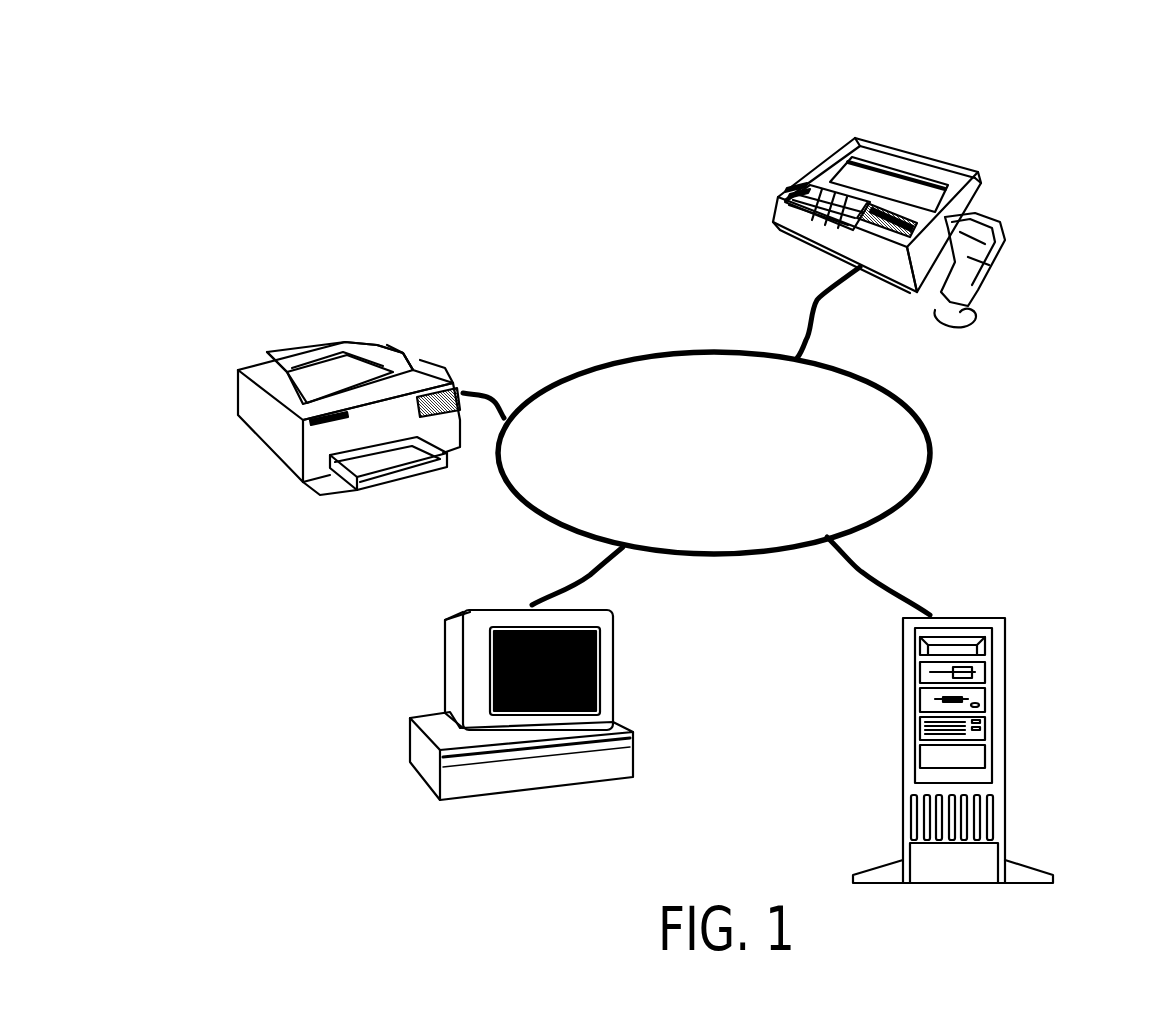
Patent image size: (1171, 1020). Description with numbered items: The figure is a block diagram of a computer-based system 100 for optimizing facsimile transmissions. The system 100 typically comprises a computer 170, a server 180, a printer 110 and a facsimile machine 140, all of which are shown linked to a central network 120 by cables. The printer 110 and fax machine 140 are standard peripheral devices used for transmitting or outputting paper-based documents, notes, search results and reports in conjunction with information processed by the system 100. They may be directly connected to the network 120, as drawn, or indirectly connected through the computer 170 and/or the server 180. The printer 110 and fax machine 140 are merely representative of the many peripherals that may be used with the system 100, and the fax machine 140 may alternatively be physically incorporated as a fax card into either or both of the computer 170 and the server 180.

The computer-based system 100 is at (1083, 106).
The printer 110 is at (248, 358).
The network 120 is at (637, 355).
The facsimile machine 140 is at (857, 140).
The computer 170 is at (413, 717).
The server 180 is at (962, 610).